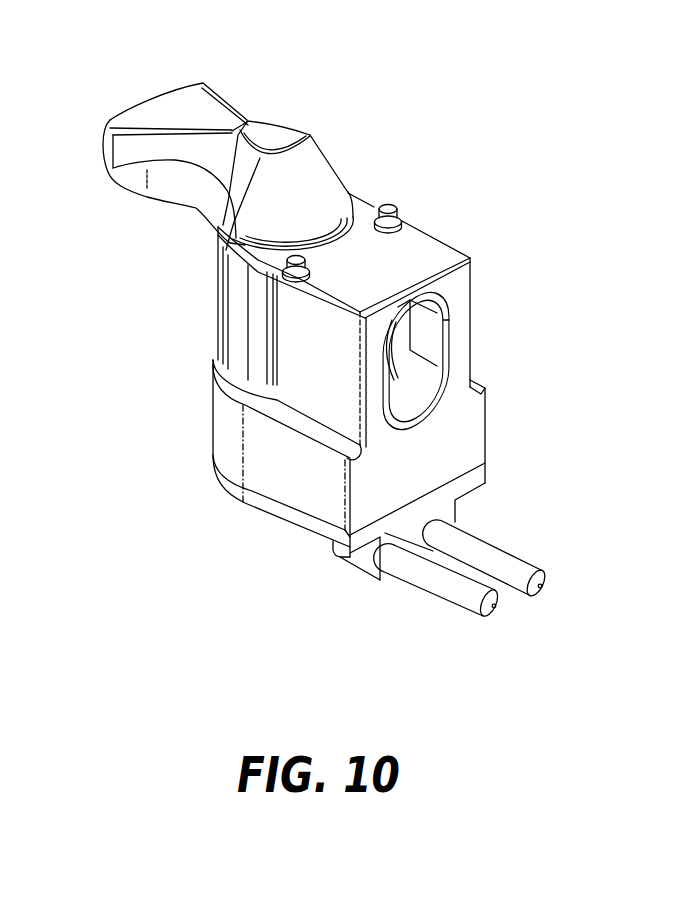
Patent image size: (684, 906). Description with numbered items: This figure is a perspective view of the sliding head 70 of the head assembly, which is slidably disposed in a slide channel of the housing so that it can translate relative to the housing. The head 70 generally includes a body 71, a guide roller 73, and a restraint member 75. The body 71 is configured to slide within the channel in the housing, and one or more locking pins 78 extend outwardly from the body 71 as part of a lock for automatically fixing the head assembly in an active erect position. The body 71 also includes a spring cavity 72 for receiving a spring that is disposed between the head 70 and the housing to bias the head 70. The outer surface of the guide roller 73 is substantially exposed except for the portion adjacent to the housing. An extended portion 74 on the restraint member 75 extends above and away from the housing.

The head 70 is at (495, 88).
The body 71 is at (290, 512).
The spring cavity 72 is at (408, 377).
The guide roller 73 is at (223, 300).
The extended portion 74 is at (158, 112).
The restraint member 75 is at (265, 137).
The locking pins 78 is at (502, 553).